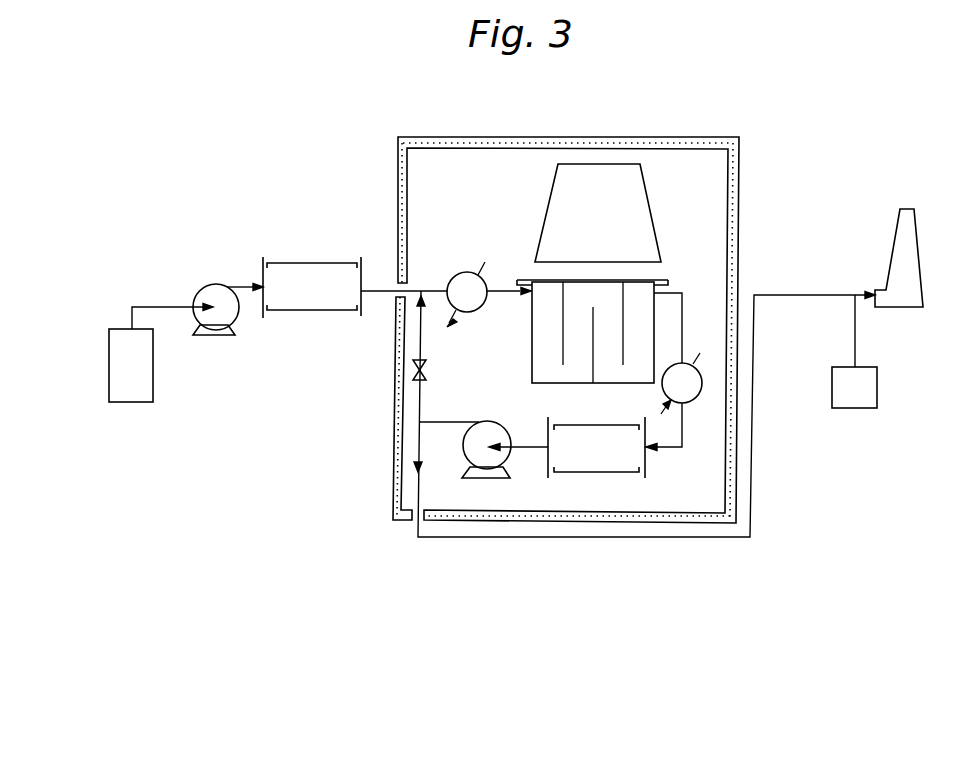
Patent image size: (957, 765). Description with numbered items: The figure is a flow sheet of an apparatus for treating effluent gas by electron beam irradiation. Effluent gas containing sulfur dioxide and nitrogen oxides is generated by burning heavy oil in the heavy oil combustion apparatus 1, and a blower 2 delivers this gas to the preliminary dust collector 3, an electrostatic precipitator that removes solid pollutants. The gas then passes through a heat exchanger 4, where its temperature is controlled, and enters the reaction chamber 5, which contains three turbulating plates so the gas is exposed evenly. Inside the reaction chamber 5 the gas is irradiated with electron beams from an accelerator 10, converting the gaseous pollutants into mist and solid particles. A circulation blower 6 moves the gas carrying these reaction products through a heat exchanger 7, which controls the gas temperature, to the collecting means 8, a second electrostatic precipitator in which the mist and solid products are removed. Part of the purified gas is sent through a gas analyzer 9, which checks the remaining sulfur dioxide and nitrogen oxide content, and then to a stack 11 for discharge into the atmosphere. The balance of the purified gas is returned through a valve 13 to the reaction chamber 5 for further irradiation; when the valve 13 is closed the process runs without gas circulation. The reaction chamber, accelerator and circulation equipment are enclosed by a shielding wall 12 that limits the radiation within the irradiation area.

The heavy oil combustion apparatus 1 is at (153, 386).
The blower 2 is at (205, 284).
The preliminary dust collector 3 is at (317, 311).
The heat exchanger 4 is at (463, 272).
The reaction chamber 5 is at (532, 358).
The circulation blower 6 is at (497, 478).
The heat exchanger 7 is at (697, 400).
The collecting means 8 is at (603, 472).
The gas analyzer 9 is at (855, 408).
The accelerator 10 is at (611, 225).
The stack 11 is at (892, 250).
The shielding wall 12 is at (740, 176).
The valve 13 is at (421, 372).